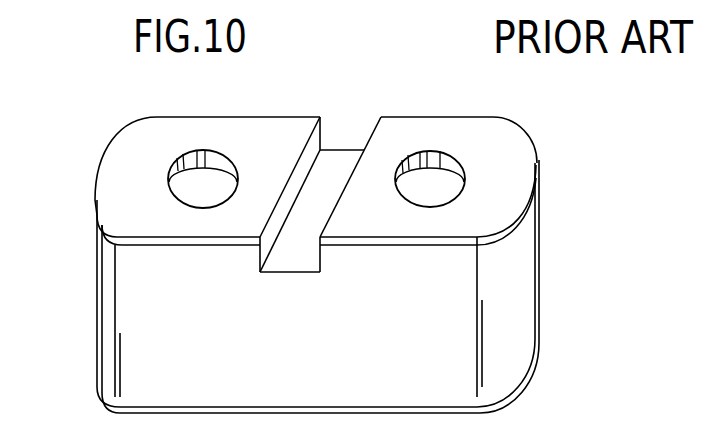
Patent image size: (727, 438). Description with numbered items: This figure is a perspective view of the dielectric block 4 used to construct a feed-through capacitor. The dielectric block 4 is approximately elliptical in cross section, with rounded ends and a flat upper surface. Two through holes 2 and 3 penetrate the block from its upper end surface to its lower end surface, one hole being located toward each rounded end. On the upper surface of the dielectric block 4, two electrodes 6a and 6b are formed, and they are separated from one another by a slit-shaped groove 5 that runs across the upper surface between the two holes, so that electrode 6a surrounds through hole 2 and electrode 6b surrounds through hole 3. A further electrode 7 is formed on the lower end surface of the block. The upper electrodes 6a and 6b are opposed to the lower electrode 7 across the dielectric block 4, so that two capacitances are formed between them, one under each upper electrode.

The through hole 2 is at (201, 184).
The through hole 3 is at (436, 184).
The dielectric block 4 is at (550, 287).
The slit-shaped groove 5 is at (325, 183).
The electrode 6a is at (115, 190).
The electrode 6b is at (505, 170).
The electrode 7 is at (152, 413).